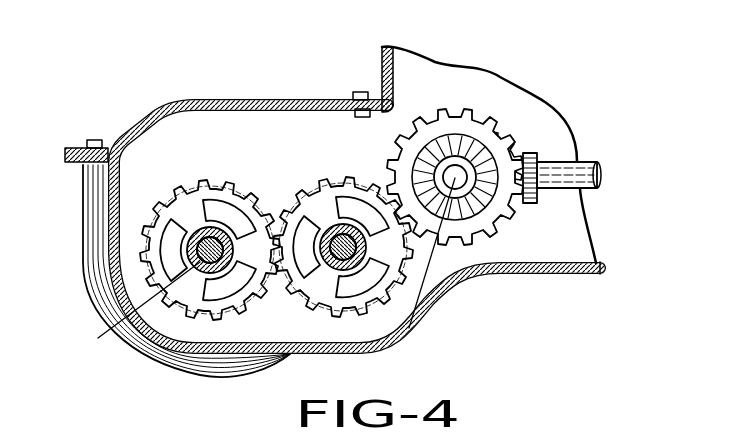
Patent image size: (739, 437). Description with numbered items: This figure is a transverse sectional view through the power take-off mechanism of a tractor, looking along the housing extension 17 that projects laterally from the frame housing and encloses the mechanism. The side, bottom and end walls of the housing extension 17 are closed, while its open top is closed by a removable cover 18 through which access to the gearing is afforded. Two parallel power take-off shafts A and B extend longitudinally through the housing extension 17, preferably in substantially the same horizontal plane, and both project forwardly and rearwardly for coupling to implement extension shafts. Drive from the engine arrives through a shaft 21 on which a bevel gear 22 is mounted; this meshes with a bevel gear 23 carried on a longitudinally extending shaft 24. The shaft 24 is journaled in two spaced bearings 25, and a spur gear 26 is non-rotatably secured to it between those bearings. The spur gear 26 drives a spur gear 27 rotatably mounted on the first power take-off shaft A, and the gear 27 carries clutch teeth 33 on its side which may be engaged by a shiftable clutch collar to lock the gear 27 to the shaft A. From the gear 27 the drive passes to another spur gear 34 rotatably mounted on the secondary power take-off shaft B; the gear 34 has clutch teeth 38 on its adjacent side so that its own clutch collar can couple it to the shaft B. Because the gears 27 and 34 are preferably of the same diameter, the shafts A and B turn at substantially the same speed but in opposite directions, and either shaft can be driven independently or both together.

The housing extension 17 is at (218, 350).
The removable cover 18 is at (225, 100).
The shaft 21 is at (583, 172).
The bevel gear 22 is at (537, 197).
The bevel gear 23 is at (497, 108).
The longitudinally extending shaft 24 is at (480, 205).
The bearings 25 is at (460, 190).
The spur gear 26 is at (462, 118).
The spur gear 27 is at (303, 290).
The clutch teeth 33 is at (300, 210).
The spur gear 34 is at (183, 213).
The clutch teeth 38 is at (233, 218).
The first power take-off shaft A is at (360, 262).
The secondary power take-off shaft B is at (140, 309).